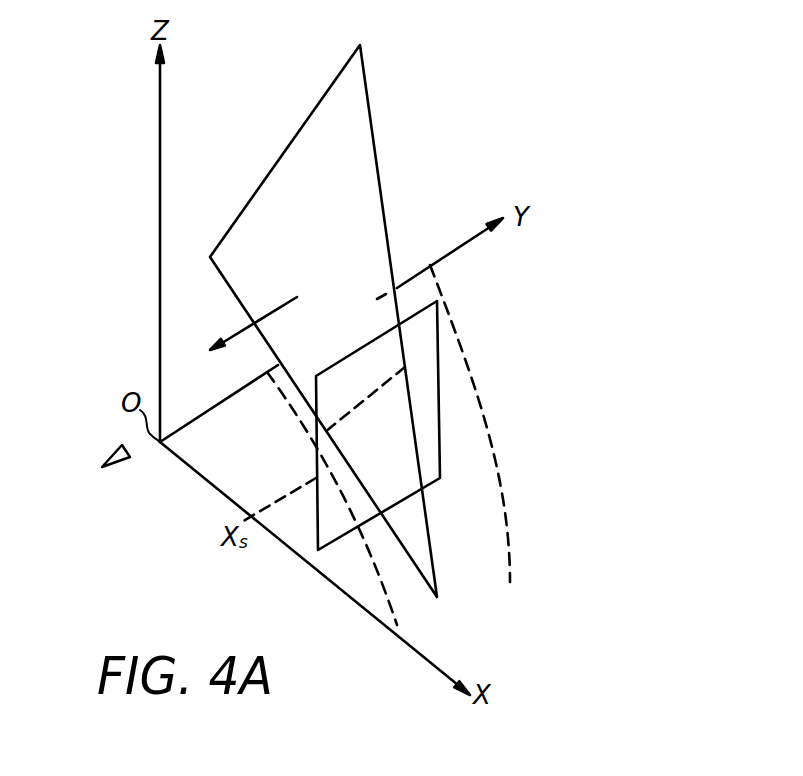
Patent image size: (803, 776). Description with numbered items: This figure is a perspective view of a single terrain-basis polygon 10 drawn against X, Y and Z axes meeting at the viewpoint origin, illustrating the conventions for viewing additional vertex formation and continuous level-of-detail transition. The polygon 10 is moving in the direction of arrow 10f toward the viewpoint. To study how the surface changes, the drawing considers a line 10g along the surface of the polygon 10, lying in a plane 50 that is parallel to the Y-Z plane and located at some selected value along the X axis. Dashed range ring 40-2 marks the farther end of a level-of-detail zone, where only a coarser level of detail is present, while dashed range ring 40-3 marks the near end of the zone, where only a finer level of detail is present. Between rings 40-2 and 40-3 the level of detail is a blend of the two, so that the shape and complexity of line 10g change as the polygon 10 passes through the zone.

The terrain-basis polygon 10 is at (433, 557).
The arrow 10f is at (232, 332).
The line 10g is at (367, 393).
The plane 50 is at (441, 453).
The range ring 40-2 is at (502, 467).
The range ring 40-3 is at (388, 595).